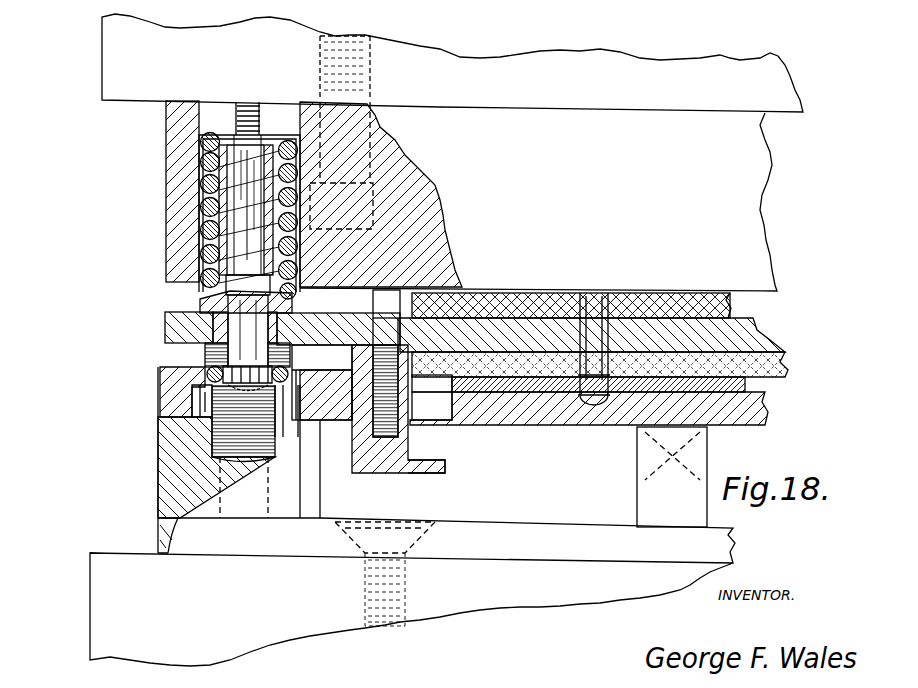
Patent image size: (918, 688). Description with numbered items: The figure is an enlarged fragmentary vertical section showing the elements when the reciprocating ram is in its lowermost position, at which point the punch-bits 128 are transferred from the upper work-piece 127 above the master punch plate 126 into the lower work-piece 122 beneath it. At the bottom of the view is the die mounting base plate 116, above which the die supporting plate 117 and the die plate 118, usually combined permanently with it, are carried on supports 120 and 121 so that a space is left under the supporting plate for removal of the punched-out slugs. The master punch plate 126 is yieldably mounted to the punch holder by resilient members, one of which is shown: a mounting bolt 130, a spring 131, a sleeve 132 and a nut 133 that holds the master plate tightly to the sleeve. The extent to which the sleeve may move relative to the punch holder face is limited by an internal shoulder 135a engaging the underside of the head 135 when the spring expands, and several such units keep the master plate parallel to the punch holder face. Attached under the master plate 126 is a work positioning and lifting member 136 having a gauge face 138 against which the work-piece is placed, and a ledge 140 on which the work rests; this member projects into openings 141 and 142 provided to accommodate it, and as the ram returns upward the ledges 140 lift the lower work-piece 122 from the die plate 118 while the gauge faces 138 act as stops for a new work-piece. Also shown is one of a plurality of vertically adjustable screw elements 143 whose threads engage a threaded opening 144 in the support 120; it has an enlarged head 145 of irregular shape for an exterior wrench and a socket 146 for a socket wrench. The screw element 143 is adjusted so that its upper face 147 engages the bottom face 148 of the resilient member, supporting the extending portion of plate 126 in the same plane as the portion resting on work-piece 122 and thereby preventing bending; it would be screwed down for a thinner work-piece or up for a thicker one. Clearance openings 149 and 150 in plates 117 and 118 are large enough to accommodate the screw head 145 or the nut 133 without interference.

The die mounting base plate 116 is at (738, 545).
The die supporting plate 117 is at (766, 412).
The die plate 118 is at (747, 390).
The support 120 is at (158, 474).
The support 121 is at (637, 463).
The lower work-piece 122 is at (786, 372).
The master punch plate 126 is at (760, 338).
The upper work-piece 127 is at (733, 305).
The punch-bits 128 is at (592, 306).
The mounting bolt 130 is at (243, 165).
The spring 131 is at (205, 208).
The sleeve 132 is at (200, 299).
The nut 133 is at (205, 345).
The head 135 is at (226, 262).
The internal shoulder 135a is at (266, 158).
The work positioning and lifting member 136 is at (358, 473).
The gauge face 138 is at (400, 442).
The ledge 140 is at (445, 460).
The opening 141 is at (432, 384).
The opening 142 is at (432, 406).
The vertically adjustable screw element 143 is at (225, 432).
The threaded opening 144 is at (268, 482).
The enlarged head 145 is at (212, 368).
The socket 146 is at (196, 390).
The upper face 147 is at (294, 437).
The bottom face 148 is at (292, 302).
The clearance opening 149 is at (200, 410).
The clearance opening 150 is at (322, 382).